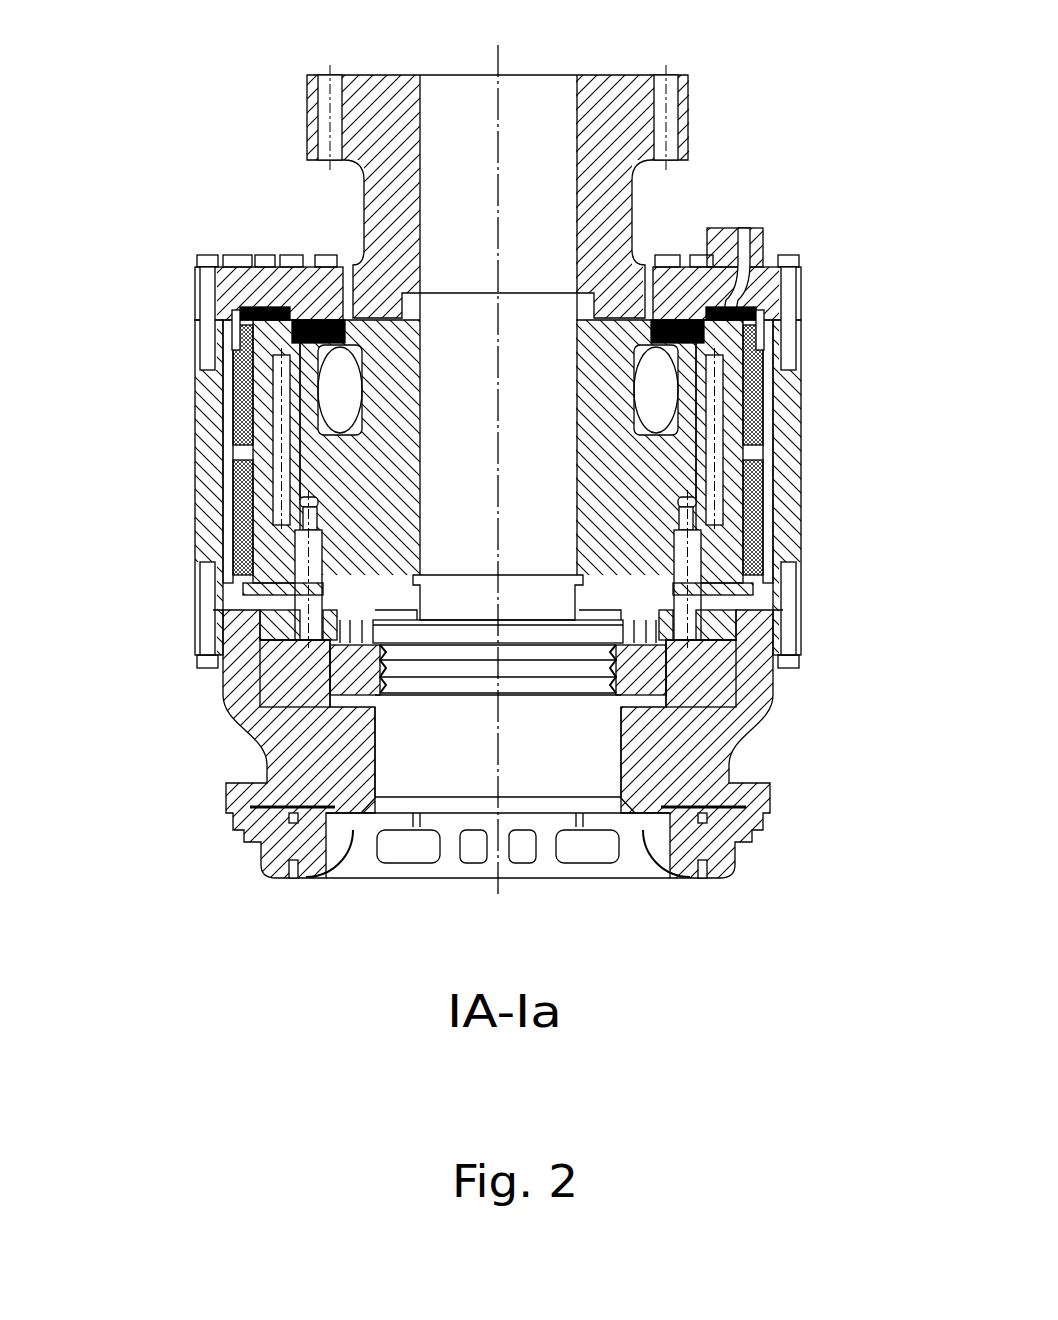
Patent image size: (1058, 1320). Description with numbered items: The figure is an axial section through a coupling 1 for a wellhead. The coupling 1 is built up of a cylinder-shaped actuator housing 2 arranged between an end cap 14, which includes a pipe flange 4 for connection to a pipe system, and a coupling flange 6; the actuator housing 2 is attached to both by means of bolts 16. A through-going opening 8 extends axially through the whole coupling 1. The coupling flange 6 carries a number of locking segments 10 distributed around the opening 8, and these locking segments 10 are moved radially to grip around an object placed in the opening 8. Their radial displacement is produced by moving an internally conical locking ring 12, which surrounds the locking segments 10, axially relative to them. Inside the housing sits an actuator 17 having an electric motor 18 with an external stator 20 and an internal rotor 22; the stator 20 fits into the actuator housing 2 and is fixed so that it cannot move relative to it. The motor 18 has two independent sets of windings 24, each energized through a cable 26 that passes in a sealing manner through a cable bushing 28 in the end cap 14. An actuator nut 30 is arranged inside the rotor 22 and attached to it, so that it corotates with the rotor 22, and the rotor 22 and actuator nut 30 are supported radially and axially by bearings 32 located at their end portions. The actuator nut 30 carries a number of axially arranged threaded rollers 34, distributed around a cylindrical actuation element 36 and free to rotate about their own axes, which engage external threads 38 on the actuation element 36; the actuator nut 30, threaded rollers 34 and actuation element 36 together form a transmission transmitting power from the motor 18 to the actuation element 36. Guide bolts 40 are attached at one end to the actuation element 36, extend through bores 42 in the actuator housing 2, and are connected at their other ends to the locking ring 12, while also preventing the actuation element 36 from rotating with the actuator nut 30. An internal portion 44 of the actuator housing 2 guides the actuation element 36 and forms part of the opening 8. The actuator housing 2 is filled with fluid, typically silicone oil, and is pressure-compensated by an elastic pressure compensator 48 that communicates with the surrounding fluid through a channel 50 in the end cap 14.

The coupling 1 is at (499, 447).
The actuator housing 2 is at (499, 487).
The pipe flange 4 is at (614, 94).
The coupling flange 6 is at (491, 744).
The through-going opening 8 is at (577, 113).
The locking segments 10 is at (650, 680).
The locking ring 12 is at (735, 655).
The end cap 14 is at (668, 270).
The bolts 16 is at (793, 318).
The actuator 17 is at (781, 427).
The electric motor 18 is at (216, 447).
The stator 20 is at (233, 517).
The rotor 22 is at (260, 538).
The windings 24 is at (220, 357).
The cables 26 is at (767, 313).
The cable bushing 28 is at (767, 240).
The actuator nut 30 is at (222, 370).
The bearings 32 is at (203, 340).
The threaded rollers 34 is at (258, 397).
The actuation element 36 is at (300, 410).
The external threads 38 is at (225, 387).
The guide bolts 40 is at (330, 612).
The bores 42 is at (313, 597).
The internal portion 44 is at (262, 705).
The pressure compensator 48 is at (300, 321).
The channel 50 is at (330, 318).